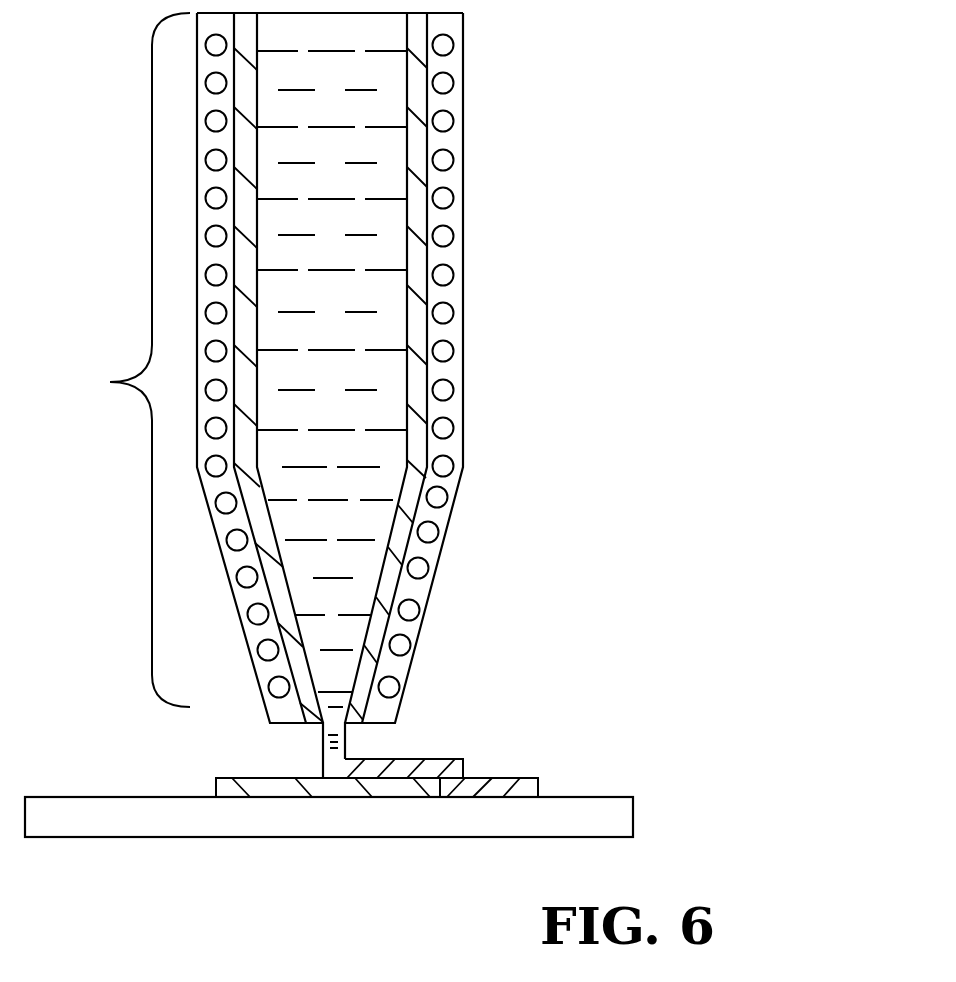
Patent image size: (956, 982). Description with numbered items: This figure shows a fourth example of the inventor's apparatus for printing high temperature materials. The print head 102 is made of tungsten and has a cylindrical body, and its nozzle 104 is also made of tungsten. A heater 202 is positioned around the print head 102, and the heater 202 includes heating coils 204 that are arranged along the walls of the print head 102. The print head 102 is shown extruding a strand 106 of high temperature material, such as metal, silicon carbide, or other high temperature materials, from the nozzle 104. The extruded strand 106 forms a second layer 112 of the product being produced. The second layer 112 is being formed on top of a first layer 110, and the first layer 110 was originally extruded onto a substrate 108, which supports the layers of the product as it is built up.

The print head 102 is at (585, 93).
The nozzle 104 is at (395, 552).
The strand 106 is at (323, 742).
The substrate 108 is at (590, 797).
The first layer 110 is at (248, 778).
The second layer 112 is at (410, 758).
The heater 202 is at (110, 360).
The heating coils 204 is at (445, 126).